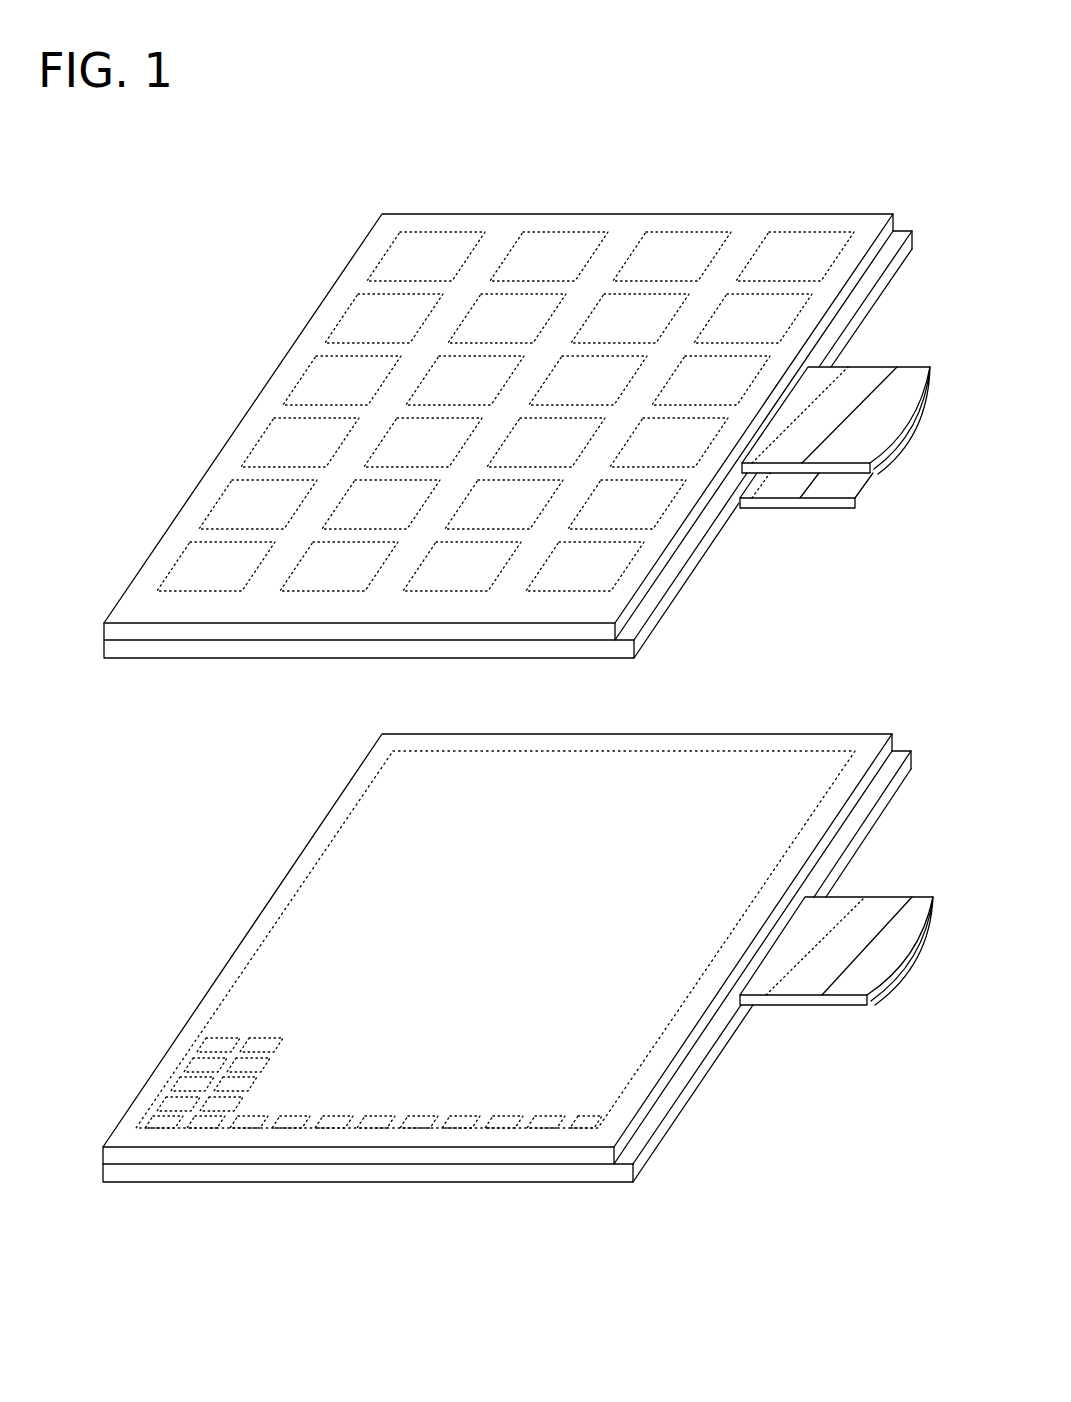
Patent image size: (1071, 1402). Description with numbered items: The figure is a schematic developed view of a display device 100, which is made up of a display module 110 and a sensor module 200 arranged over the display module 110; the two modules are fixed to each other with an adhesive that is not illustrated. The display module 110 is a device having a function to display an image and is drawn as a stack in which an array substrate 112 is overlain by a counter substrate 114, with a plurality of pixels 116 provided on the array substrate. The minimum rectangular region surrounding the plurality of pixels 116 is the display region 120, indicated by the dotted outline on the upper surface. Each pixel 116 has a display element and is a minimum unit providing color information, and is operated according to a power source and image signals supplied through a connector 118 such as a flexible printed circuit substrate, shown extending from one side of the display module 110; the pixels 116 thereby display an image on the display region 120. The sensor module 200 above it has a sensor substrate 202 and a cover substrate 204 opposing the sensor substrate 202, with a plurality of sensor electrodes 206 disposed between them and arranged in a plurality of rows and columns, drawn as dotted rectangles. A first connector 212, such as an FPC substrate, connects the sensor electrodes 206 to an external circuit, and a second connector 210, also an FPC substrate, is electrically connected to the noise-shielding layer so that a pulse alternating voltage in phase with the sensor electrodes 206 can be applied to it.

The display device 100 is at (112, 160).
The sensor module 200 is at (103, 207).
The sensor substrate 202 is at (648, 623).
The cover substrate 204 is at (302, 353).
The sensor electrodes 206 is at (197, 593).
The second connector 210 is at (795, 493).
The first connector 212 is at (892, 410).
The display module 110 is at (103, 714).
The array substrate 112 is at (645, 1153).
The counter substrate 114 is at (345, 792).
The pixels 116 is at (210, 1105).
The connector 118 is at (797, 985).
The display region 120 is at (325, 858).